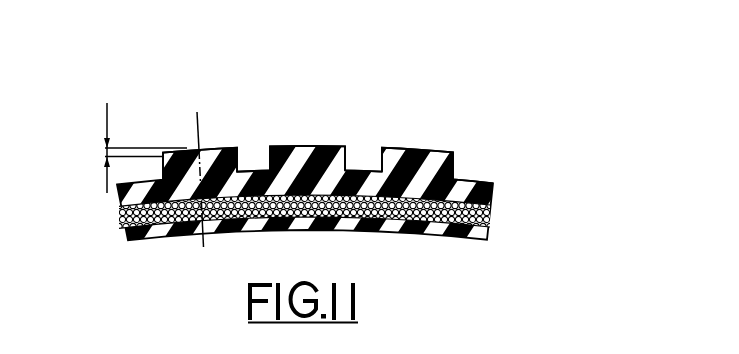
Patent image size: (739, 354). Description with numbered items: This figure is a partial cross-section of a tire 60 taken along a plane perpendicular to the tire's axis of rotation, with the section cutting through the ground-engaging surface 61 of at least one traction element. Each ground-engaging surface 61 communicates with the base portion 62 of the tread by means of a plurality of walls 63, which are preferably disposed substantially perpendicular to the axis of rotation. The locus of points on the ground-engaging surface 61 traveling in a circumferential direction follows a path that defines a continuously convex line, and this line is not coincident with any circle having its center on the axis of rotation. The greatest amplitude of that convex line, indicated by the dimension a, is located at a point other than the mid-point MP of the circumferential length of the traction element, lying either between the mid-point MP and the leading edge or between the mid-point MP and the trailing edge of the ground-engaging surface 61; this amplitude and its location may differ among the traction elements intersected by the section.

The tire 60 is at (338, 158).
The ground-engaging surface 61 is at (221, 150).
The base portion 62 is at (490, 187).
The walls 63 is at (253, 169).
The depth dimension a is at (106, 118).
The mid-point MP is at (200, 120).